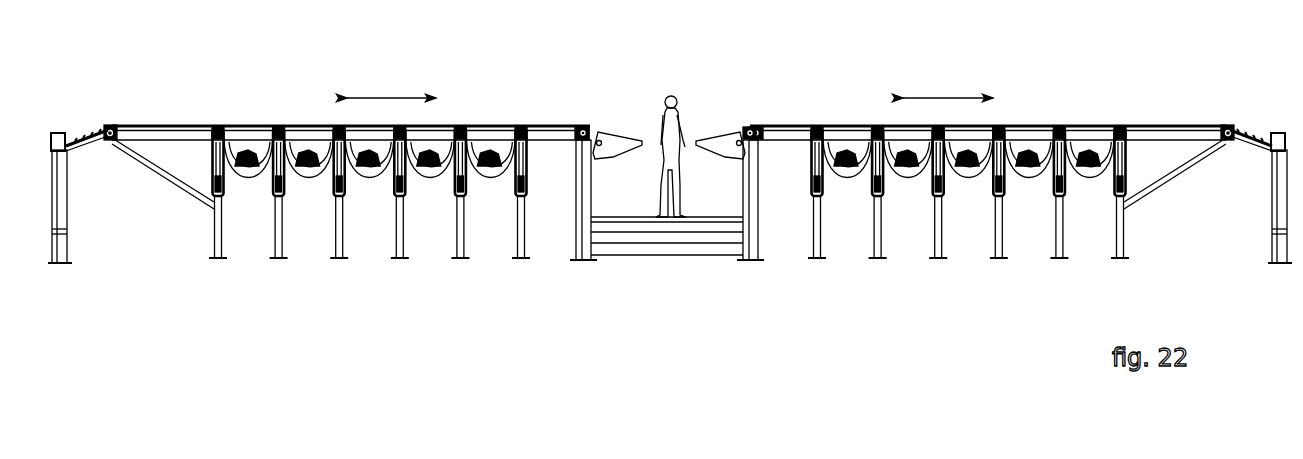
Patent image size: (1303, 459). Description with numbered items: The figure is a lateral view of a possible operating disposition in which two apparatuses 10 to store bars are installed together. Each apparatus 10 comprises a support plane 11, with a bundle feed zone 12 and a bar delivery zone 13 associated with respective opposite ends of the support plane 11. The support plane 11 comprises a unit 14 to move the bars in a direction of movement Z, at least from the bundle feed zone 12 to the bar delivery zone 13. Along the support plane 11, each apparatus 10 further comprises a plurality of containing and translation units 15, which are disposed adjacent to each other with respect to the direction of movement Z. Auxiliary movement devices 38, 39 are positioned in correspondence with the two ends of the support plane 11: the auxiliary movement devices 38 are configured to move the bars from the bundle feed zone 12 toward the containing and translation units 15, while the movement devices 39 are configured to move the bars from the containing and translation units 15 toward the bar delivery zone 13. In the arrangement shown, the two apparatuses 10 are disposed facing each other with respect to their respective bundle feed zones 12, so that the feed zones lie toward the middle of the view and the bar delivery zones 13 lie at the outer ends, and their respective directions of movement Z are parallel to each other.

The apparatus to store bars 10 is at (670, 155).
The support plane 11 is at (208, 100).
The bundle feed zone 12 is at (574, 123).
The bar delivery zone 13 is at (93, 114).
The unit to move the bars 14 is at (482, 123).
The containing and translation units 15 is at (256, 241).
The auxiliary movement devices 38 is at (566, 158).
The movement devices 39 is at (176, 157).
The direction of movement Z is at (388, 97).